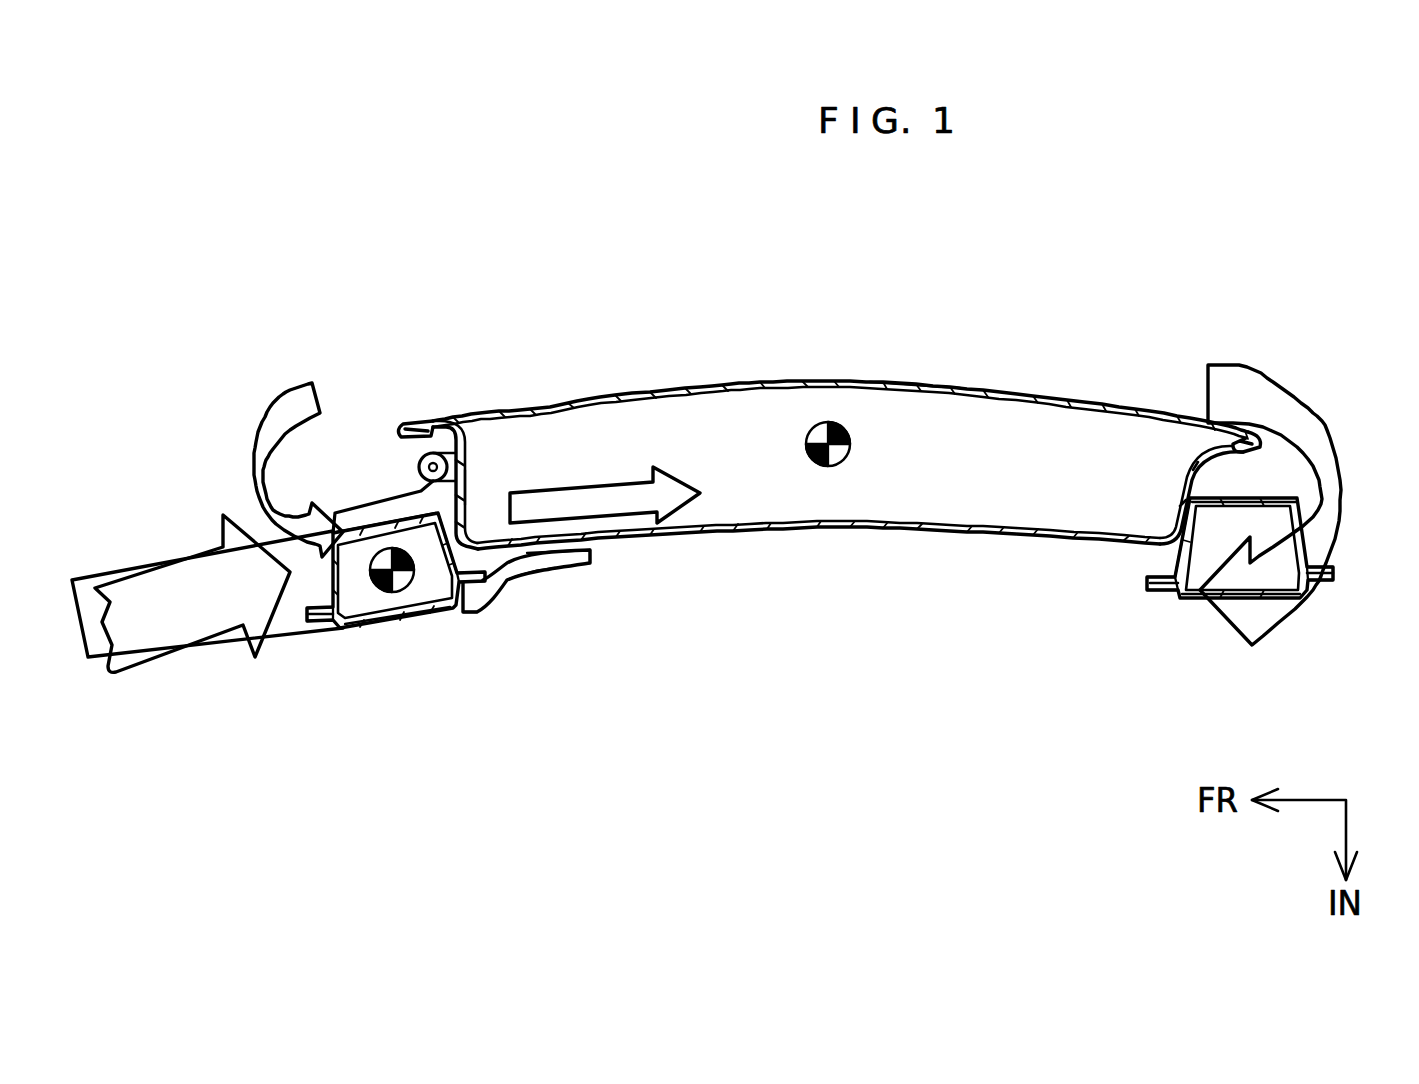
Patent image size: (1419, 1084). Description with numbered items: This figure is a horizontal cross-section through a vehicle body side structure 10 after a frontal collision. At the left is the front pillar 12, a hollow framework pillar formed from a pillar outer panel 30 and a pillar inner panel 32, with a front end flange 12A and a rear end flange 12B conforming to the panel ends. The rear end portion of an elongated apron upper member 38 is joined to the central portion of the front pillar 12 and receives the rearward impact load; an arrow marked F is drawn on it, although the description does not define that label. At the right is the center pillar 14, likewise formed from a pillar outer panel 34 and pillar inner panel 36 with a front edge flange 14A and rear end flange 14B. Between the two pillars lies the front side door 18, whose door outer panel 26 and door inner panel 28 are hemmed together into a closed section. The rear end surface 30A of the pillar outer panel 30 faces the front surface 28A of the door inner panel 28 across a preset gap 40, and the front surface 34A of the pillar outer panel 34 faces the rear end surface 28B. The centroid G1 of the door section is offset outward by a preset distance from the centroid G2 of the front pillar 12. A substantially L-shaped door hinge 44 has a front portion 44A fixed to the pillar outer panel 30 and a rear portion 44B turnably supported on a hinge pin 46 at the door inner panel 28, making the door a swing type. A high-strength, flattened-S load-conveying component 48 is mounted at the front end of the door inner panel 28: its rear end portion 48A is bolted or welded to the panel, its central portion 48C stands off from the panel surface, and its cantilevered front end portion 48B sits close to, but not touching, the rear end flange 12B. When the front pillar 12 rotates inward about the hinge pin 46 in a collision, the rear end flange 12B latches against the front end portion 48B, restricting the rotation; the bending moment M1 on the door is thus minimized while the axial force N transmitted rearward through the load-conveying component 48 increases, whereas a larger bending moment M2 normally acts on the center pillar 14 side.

The vehicle body side structure 10 is at (771, 350).
The front pillar 12 is at (372, 647).
The front end flange 12A is at (315, 624).
The rear end flange 12B is at (472, 590).
The center pillar 14 is at (1236, 608).
The front edge flange 14A is at (1152, 586).
The rear end flange 14B is at (1333, 584).
The front side door 18 is at (1027, 391).
The door outer panel 26 is at (913, 382).
The door inner panel 28 is at (862, 540).
The front surface 28A is at (477, 487).
The rear end surface 28B is at (1192, 455).
The pillar outer panel 30 is at (364, 515).
The rear end surface 30A is at (527, 580).
The pillar inner panel 32 is at (357, 622).
The pillar outer panel 34 is at (1266, 494).
The front surface 34A is at (1162, 540).
The pillar inner panel 36 is at (1190, 602).
The apron upper member 38 is at (182, 650).
The gap 40 is at (452, 537).
The door hinge 44 is at (520, 298).
The front portion 44A is at (378, 505).
The rear portion 44B is at (462, 445).
The hinge pin 46 is at (433, 452).
The load-conveying component 48 is at (604, 572).
The rear end portion 48A is at (594, 561).
The front end portion 48B is at (483, 608).
The central portion 48C is at (560, 594).
The centroid position G1 is at (845, 458).
The centroid position G2 is at (405, 592).
The bending moment M1 is at (254, 466).
The bending moment M2 is at (1327, 430).
The axial force N is at (603, 490).
The impact force F is at (137, 566).